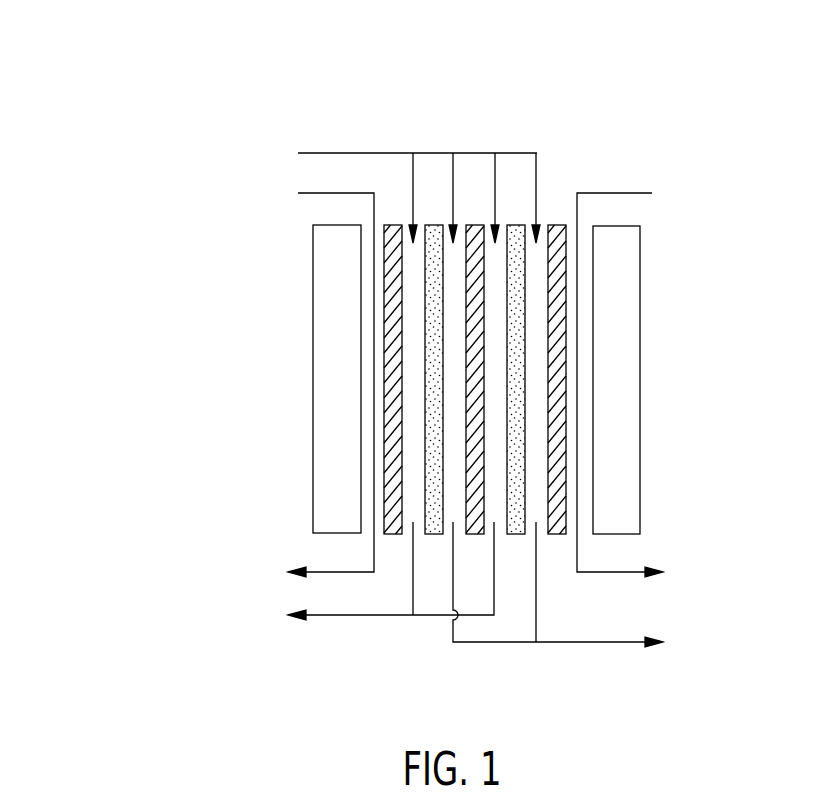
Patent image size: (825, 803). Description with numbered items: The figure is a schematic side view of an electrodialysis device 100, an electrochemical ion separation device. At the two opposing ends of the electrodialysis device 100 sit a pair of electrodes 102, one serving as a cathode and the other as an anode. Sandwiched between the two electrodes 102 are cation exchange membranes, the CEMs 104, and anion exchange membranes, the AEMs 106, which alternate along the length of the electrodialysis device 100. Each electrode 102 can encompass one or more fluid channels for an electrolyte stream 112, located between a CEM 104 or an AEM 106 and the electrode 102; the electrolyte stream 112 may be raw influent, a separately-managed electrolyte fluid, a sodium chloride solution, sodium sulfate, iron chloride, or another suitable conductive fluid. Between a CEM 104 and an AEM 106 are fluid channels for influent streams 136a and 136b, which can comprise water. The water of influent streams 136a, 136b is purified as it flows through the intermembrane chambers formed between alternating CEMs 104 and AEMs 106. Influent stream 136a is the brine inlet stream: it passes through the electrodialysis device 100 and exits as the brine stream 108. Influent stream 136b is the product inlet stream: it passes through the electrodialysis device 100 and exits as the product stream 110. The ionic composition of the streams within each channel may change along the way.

The electrodialysis device 100 is at (167, 88).
The electrode 102 is at (312, 288).
The CEM 104 is at (392, 293).
The AEM 106 is at (435, 348).
The brine stream 108 is at (383, 616).
The product stream 110 is at (562, 642).
The electrolyte stream 112 is at (312, 194).
The influent stream 136a is at (413, 188).
The influent stream 136b is at (453, 188).